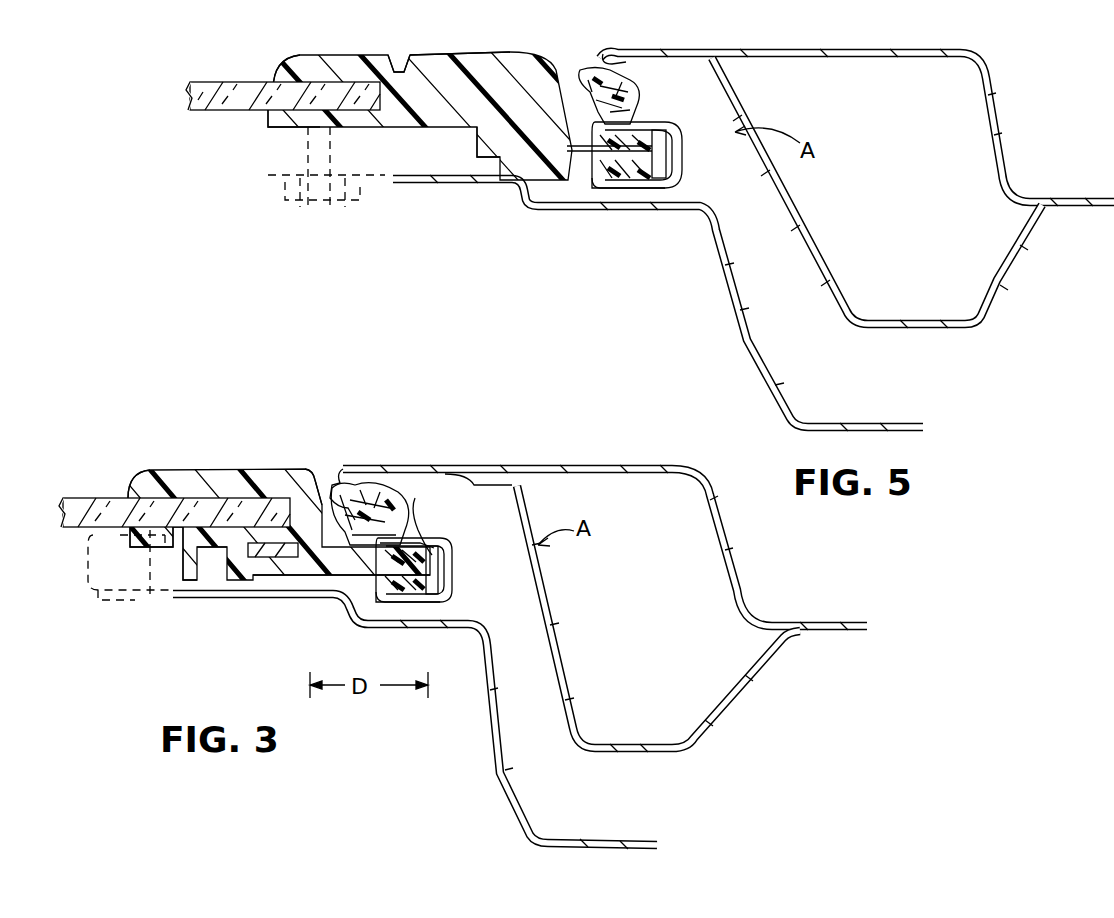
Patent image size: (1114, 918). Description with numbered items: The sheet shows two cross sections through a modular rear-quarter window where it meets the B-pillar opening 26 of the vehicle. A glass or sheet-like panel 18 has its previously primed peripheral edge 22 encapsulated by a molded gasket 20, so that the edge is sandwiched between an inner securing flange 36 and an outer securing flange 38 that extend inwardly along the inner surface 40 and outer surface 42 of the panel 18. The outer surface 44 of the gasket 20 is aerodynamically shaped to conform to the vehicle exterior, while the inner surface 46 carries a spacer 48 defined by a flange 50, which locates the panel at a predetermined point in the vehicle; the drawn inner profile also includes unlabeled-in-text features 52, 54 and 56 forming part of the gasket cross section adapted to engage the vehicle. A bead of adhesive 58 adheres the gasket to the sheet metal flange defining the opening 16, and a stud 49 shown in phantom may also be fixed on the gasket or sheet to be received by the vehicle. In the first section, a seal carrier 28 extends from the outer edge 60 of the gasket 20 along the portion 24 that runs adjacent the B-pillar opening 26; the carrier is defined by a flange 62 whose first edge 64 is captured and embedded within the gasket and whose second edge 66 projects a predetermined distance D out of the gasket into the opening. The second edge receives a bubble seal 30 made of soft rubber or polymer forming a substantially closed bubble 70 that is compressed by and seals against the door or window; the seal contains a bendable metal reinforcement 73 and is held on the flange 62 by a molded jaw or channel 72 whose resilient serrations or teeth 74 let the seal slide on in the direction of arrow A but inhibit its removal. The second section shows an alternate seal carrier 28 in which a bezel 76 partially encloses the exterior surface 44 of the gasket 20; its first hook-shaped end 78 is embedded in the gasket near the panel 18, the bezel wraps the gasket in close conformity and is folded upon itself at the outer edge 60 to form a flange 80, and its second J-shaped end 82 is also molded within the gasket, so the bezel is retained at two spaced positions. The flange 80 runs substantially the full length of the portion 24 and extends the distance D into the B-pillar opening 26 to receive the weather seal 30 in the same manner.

In FIG. 3, the opening 16 is at (356, 626).
In FIG. 5, the glass or sheet-like panel 18 is at (210, 82).
In FIG. 3, the glass or sheet-like panel 18 is at (72, 498).
In FIG. 5, the molded gasket 20 is at (286, 37).
In FIG. 3, the molded gasket 20 is at (179, 449).
In FIG. 5, the peripheral edge 22 is at (352, 80).
In FIG. 3, the peripheral edge 22 is at (245, 470).
In FIG. 3, the portion of gasket 24 is at (308, 480).
In FIG. 5, the B-pillar opening 26 is at (744, 162).
In FIG. 3, the B-pillar opening 26 is at (526, 588).
In FIG. 5, the seal carrier 28 is at (579, 192).
In FIG. 3, the seal carrier 28 is at (345, 623).
In FIG. 5, the bubble seal 30 is at (663, 106).
In FIG. 3, the bubble seal 30 is at (478, 541).
In FIG. 5, the inner securing flange 36 is at (276, 61).
In FIG. 3, the inner securing flange 36 is at (140, 474).
In FIG. 5, the outer securing flange 38 is at (276, 124).
In FIG. 3, the outer securing flange 38 is at (150, 542).
In FIG. 3, the inner surface of panel 40 is at (92, 528).
In FIG. 3, the outer surface of panel 42 is at (98, 498).
In FIG. 5, the outer surface of gasket 44 is at (318, 55).
In FIG. 3, the outer surface of gasket 44 is at (202, 468).
In FIG. 5, the inner surface of gasket 46 is at (410, 126).
In FIG. 3, the inner surface of gasket 46 is at (282, 578).
In FIG. 5, the spacer 48 is at (478, 152).
In FIG. 3, the spacer 48 is at (188, 570).
In FIG. 3, the stud 49 is at (178, 598).
In FIG. 3, the flange 50 is at (162, 585).
In FIG. 3, the arm portion 52 is at (254, 582).
In FIG. 3, the notch 54 is at (192, 552).
In FIG. 3, the notch wall 56 is at (228, 582).
In FIG. 5, the bead of adhesive 58 is at (392, 176).
In FIG. 3, the bead of adhesive 58 is at (120, 592).
In FIG. 5, the outer edge of gasket 60 is at (565, 78).
In FIG. 3, the outer edge of gasket 60 is at (330, 484).
In FIG. 3, the flange of seal carrier 62 is at (372, 604).
In FIG. 3, the first edge of flange 64 is at (285, 560).
In FIG. 3, the second edge of flange 66 is at (428, 546).
In FIG. 5, the bubble 70 is at (622, 90).
In FIG. 3, the bubble 70 is at (395, 478).
In FIG. 5, the molded jaw or channel 72 is at (660, 172).
In FIG. 3, the molded jaw or channel 72 is at (432, 592).
In FIG. 5, the metal reinforcement 73 is at (668, 130).
In FIG. 3, the metal reinforcement 73 is at (448, 562).
In FIG. 3, the serrations or teeth 74 is at (420, 532).
In FIG. 5, the bezel 76 is at (446, 54).
In FIG. 5, the hook-shaped end 78 is at (400, 60).
In FIG. 5, the flange 80 is at (582, 168).
In FIG. 5, the J-shaped end 82 is at (560, 145).